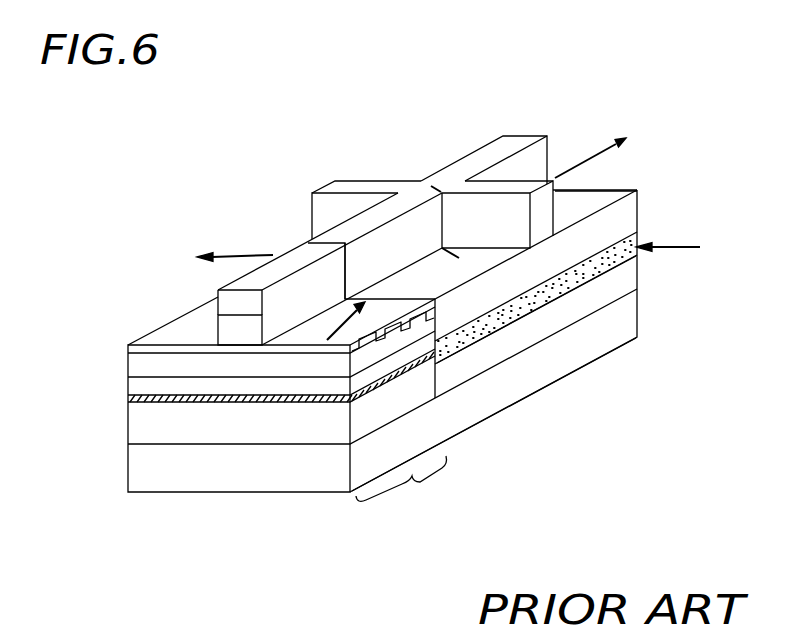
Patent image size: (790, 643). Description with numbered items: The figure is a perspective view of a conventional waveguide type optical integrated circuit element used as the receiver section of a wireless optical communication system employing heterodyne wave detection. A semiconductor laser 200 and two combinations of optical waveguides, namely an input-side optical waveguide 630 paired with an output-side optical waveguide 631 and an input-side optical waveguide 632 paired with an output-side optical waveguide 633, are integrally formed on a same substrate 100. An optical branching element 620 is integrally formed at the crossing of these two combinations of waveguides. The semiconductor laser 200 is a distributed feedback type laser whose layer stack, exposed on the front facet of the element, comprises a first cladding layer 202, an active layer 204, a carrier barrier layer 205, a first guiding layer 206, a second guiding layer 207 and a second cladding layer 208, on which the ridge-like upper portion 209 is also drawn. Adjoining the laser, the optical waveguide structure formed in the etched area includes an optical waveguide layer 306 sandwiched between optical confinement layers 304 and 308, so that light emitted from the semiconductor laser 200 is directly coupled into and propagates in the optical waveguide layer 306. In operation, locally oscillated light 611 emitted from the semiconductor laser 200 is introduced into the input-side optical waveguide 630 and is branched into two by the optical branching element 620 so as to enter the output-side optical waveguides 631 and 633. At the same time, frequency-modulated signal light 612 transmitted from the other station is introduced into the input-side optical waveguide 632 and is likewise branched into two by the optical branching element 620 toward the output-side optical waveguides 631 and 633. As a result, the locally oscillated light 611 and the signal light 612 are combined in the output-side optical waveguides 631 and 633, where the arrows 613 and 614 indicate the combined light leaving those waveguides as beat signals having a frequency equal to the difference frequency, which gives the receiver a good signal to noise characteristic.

The substrate 100 is at (637, 315).
The semiconductor laser 200 is at (401, 487).
The first cladding layer 202 is at (142, 428).
The active layer 204 is at (167, 403).
The carrier barrier layer 205 is at (140, 386).
The first guiding layer 206 is at (140, 362).
The second guiding layer 207 is at (128, 348).
The second cladding layer 208 is at (230, 330).
The contact layer 209 is at (224, 300).
The optical confinement layer 304 is at (637, 277).
The optical waveguide layer 306 is at (630, 238).
The optical confinement layer 308 is at (627, 215).
The locally oscillated light 611 is at (331, 338).
The signal light 612 is at (696, 247).
The output light 613 is at (618, 149).
The output light to side 614 is at (211, 247).
The optical branching element 620 is at (422, 172).
The input-side optical waveguide 630 is at (346, 228).
The output-side optical waveguide 631 is at (487, 157).
The input-side optical waveguide 632 is at (512, 185).
The output-side optical waveguide 633 is at (362, 187).